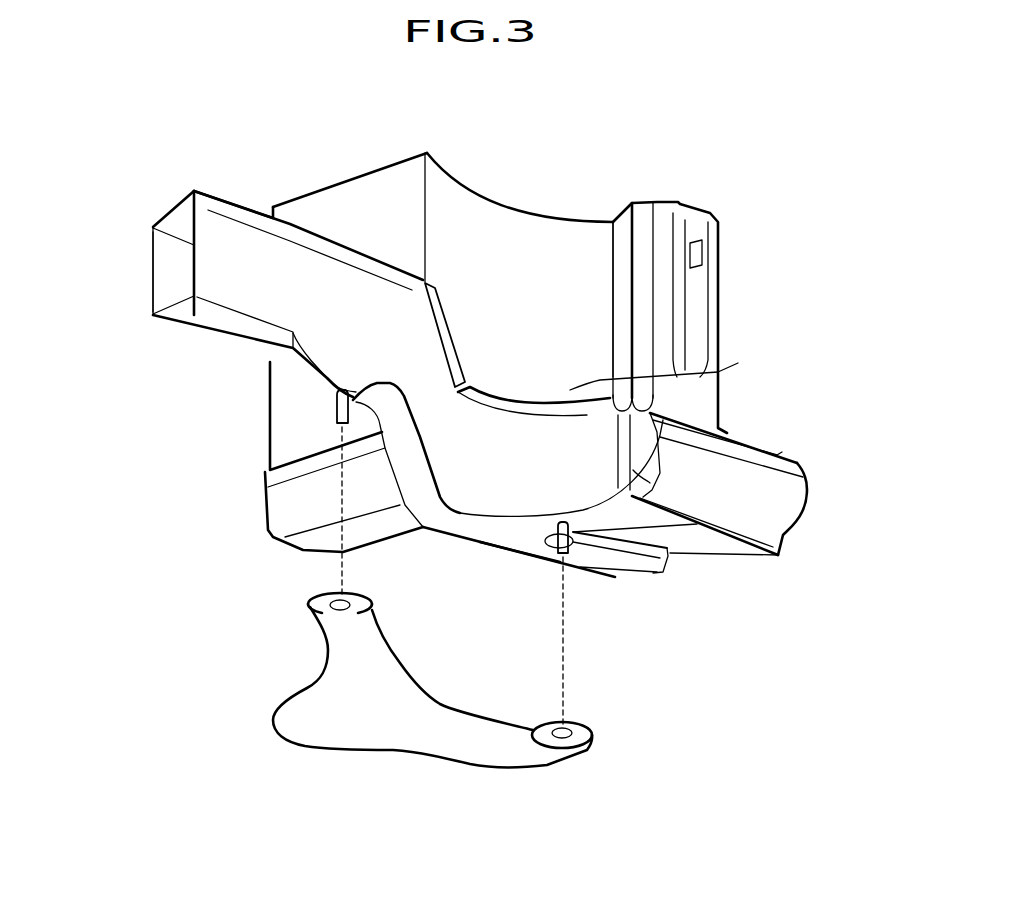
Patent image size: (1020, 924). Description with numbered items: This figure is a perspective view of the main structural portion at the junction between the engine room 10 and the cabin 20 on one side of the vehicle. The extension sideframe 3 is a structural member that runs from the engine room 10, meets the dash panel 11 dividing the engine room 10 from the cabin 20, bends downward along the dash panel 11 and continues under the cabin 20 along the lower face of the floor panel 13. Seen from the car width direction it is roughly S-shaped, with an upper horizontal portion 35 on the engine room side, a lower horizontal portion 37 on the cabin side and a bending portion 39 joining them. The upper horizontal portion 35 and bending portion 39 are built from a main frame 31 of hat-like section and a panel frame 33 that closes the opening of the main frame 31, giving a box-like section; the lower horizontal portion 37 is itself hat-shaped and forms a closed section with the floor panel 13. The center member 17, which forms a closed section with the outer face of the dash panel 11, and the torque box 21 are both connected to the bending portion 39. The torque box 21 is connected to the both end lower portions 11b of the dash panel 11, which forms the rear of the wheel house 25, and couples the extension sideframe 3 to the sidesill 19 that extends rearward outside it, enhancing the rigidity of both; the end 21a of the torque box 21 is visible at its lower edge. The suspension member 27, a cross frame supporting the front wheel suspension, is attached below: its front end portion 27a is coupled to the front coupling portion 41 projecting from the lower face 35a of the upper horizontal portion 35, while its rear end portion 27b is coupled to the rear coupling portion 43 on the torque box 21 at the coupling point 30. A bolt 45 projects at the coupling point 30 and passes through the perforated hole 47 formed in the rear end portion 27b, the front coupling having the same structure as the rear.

The extension sideframe 3 is at (162, 223).
The engine room 10 is at (300, 137).
The dash panel 11 is at (393, 187).
The both end lower portions of the dash panel 11b is at (681, 369).
The floor panel 13 is at (713, 555).
The center member 17 is at (265, 492).
The sidesill 19 is at (772, 465).
The cabin 20 is at (788, 300).
The torque box 21 is at (513, 480).
The bottom edge portion 21a is at (645, 558).
The wheel house 25 is at (523, 280).
The suspension member 27 is at (275, 705).
The front end portion of the suspension member 27a is at (310, 605).
The rear end portion of the suspension member 27b is at (590, 737).
The coupling point 30 is at (570, 560).
The main frame 31 is at (152, 270).
The panel frame 33 is at (240, 243).
The upper horizontal portion 35 is at (193, 337).
The lower face of the upper horizontal portion 35a is at (263, 352).
The lower horizontal portion 37 is at (525, 545).
The bending portion 39 is at (385, 470).
The front coupling portion 41 is at (332, 383).
The rear coupling portion 43 is at (610, 548).
The bolt 45 is at (557, 560).
The perforated hole 47 is at (570, 723).